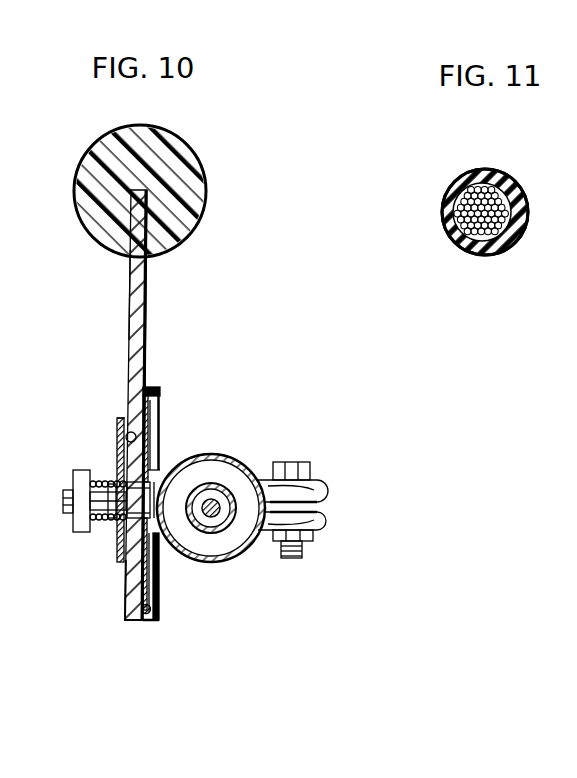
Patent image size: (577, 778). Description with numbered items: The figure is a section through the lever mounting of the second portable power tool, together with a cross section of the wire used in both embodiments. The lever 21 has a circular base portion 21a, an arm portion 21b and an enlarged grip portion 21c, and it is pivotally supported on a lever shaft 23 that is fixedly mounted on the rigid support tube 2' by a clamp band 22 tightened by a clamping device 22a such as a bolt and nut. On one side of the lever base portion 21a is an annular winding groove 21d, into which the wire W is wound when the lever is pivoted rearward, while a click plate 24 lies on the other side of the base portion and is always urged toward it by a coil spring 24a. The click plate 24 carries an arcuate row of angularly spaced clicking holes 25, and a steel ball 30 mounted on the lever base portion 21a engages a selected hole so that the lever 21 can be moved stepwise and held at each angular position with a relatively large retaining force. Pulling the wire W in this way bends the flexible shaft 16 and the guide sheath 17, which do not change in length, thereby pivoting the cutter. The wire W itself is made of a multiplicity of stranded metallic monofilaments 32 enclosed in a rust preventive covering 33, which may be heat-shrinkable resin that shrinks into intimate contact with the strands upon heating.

In FIG. 10, the support tube 2' is at (211, 434).
In FIG. 10, the flexible shaft 16 is at (226, 520).
In FIG. 10, the guide sheath 17 is at (211, 517).
In FIG. 10, the lever 21 is at (150, 322).
In FIG. 10, the circular base portion 21a is at (125, 598).
In FIG. 10, the arm portion 21b is at (144, 292).
In FIG. 10, the enlarged grip portion 21c is at (185, 168).
In FIG. 10, the annular winding groove 21d is at (148, 395).
In FIG. 10, the clamp band 22 is at (252, 462).
In FIG. 10, the clamping device 22a is at (300, 462).
In FIG. 10, the lever shaft 23 is at (112, 562).
In FIG. 10, the click plate 24 is at (117, 462).
In FIG. 10, the coil spring 24a is at (112, 522).
In FIG. 10, the clicking holes 25 is at (126, 436).
In FIG. 10, the steel ball 30 is at (130, 420).
In FIG. 11, the stranded metallic monofilaments 32 is at (507, 248).
In FIG. 11, the rust preventive covering 33 is at (458, 244).
In FIG. 10, the wire W is at (146, 615).
In FIG. 11, the wire W is at (518, 184).